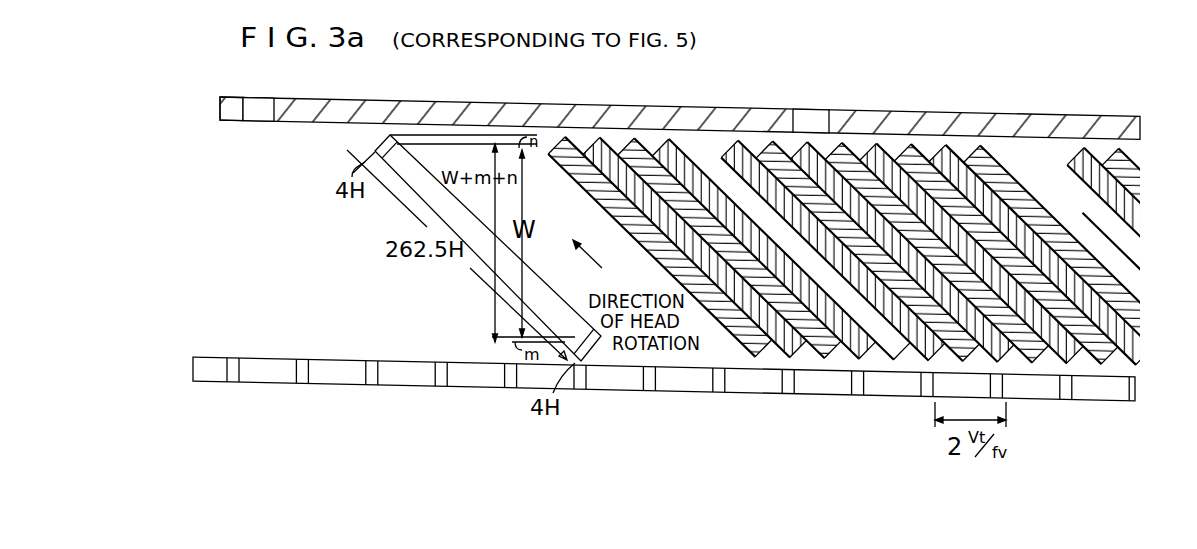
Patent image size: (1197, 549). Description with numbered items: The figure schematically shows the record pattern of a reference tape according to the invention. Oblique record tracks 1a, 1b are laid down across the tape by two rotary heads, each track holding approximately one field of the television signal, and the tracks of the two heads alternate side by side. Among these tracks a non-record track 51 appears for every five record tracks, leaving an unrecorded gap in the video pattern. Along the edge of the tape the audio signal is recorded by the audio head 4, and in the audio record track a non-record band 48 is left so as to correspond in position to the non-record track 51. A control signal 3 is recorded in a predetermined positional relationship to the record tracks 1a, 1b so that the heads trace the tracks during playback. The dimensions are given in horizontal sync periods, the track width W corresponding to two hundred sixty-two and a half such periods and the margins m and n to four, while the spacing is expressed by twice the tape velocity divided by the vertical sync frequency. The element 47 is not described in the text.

The record track 1a is at (635, 242).
The record track 1b is at (881, 253).
The control signal 3 is at (930, 395).
The audio head 4 is at (583, 99).
The drum end portion 47 is at (226, 107).
The non-record band 48 is at (263, 96).
The non-record track 51 is at (716, 152).